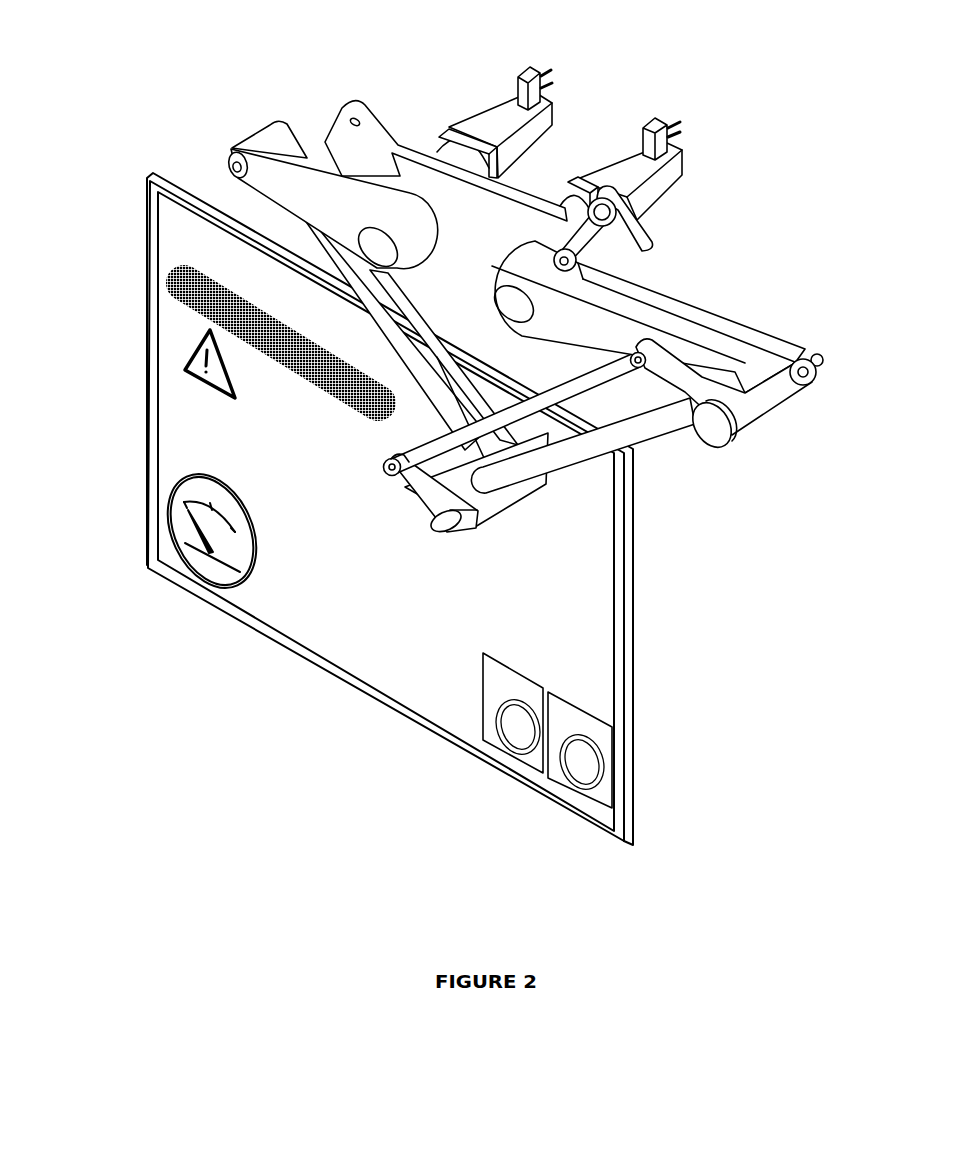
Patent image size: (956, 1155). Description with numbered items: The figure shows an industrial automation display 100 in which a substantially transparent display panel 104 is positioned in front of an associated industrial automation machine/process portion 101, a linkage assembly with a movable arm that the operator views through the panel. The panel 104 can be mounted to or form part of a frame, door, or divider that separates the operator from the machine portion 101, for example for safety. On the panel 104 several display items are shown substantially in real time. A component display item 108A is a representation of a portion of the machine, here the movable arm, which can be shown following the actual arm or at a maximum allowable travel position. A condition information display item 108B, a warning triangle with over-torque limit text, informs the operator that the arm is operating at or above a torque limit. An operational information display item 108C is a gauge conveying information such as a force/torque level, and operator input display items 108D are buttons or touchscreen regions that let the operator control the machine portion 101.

The industrial automation display 100 is at (219, 845).
The industrial automation machine/process portion 101 is at (297, 63).
The substantially transparent display panel 104 is at (697, 660).
The component display item 108A is at (103, 250).
The condition information display item 108B is at (103, 305).
The operational information display item 108C is at (253, 682).
The operator input display item 108D is at (612, 887).